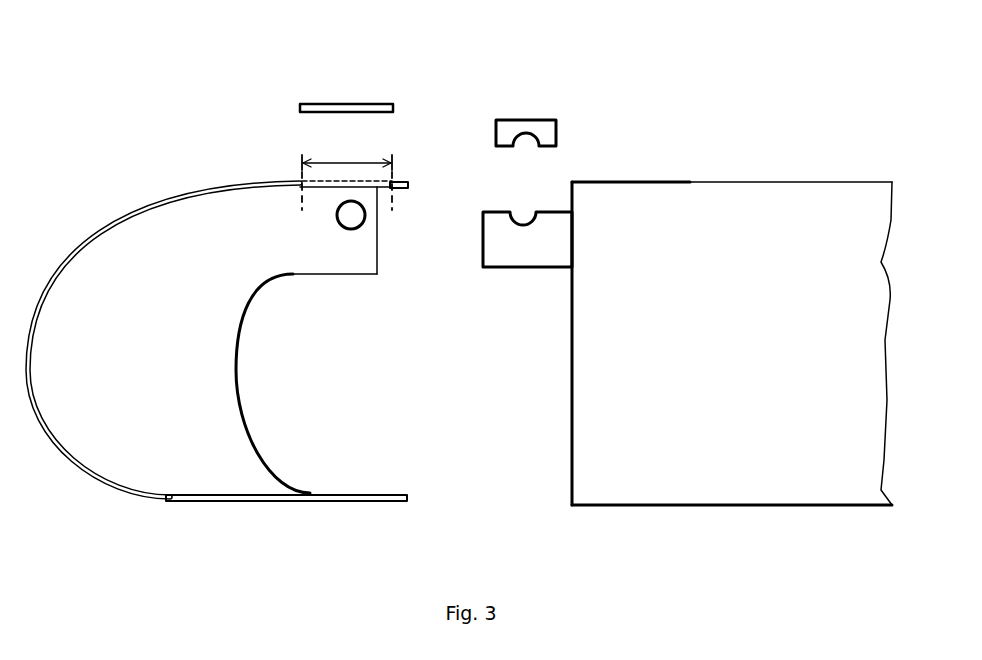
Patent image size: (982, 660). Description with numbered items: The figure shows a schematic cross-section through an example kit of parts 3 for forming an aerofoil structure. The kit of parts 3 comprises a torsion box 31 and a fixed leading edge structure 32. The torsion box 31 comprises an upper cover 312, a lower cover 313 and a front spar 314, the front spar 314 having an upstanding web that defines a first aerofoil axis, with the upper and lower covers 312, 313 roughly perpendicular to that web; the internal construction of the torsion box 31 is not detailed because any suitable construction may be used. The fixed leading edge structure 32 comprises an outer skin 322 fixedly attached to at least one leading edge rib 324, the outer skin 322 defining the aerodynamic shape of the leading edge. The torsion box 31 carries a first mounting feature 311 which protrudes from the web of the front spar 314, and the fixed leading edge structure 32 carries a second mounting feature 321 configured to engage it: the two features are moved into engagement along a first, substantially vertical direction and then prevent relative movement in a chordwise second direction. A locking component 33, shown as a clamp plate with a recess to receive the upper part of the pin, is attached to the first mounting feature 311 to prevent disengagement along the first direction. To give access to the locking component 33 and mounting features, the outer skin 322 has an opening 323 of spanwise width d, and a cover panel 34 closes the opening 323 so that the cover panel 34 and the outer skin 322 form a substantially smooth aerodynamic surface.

The kit of parts 3 is at (148, 62).
The torsion box 31 is at (731, 136).
The first mounting feature 311 is at (535, 239).
The upper cover 312 is at (796, 181).
The lower cover 313 is at (717, 507).
The front spar 314 is at (571, 386).
The fixed leading edge structure 32 is at (89, 173).
The second mounting feature 321 is at (346, 229).
The outer skin 322 is at (84, 244).
The opening 323 is at (363, 183).
The leading edge rib 324 is at (175, 338).
The locking component 33 is at (526, 122).
The cover panel 34 is at (349, 104).